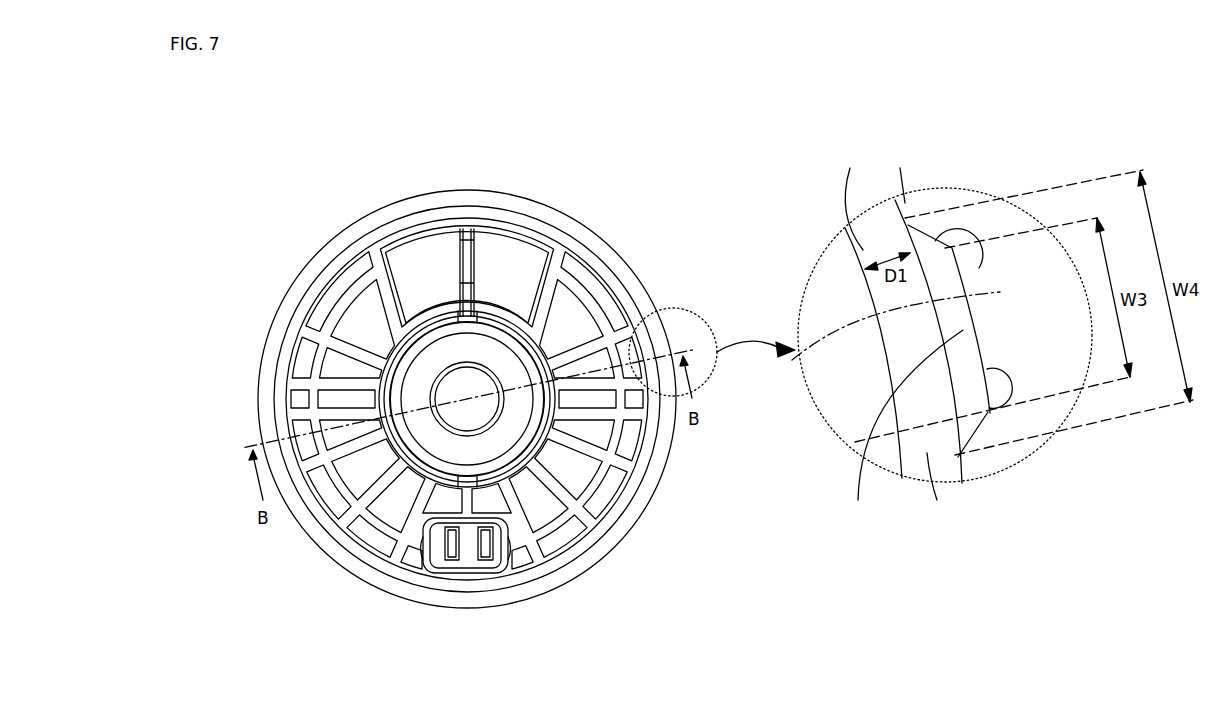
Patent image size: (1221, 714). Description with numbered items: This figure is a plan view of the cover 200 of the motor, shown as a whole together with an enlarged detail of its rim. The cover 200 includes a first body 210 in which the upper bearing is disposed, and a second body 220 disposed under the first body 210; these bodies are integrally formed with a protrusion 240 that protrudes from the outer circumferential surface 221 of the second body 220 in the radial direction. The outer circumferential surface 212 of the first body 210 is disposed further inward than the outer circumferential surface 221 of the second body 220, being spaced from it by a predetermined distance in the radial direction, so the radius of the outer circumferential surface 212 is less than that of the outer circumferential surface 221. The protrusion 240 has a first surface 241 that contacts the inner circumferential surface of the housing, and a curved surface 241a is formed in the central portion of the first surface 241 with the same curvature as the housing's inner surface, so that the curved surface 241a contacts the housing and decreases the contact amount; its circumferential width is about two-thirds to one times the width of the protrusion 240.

The cover 200 is at (236, 144).
The first body 210 is at (507, 217).
The second body 220 is at (552, 213).
The outer circumferential surface of the first body 212 is at (848, 225).
The outer circumferential surface of the second body 221 is at (897, 198).
The protrusion 240 is at (858, 463).
The first surface 241 is at (836, 375).
The curved surface 241a is at (900, 477).